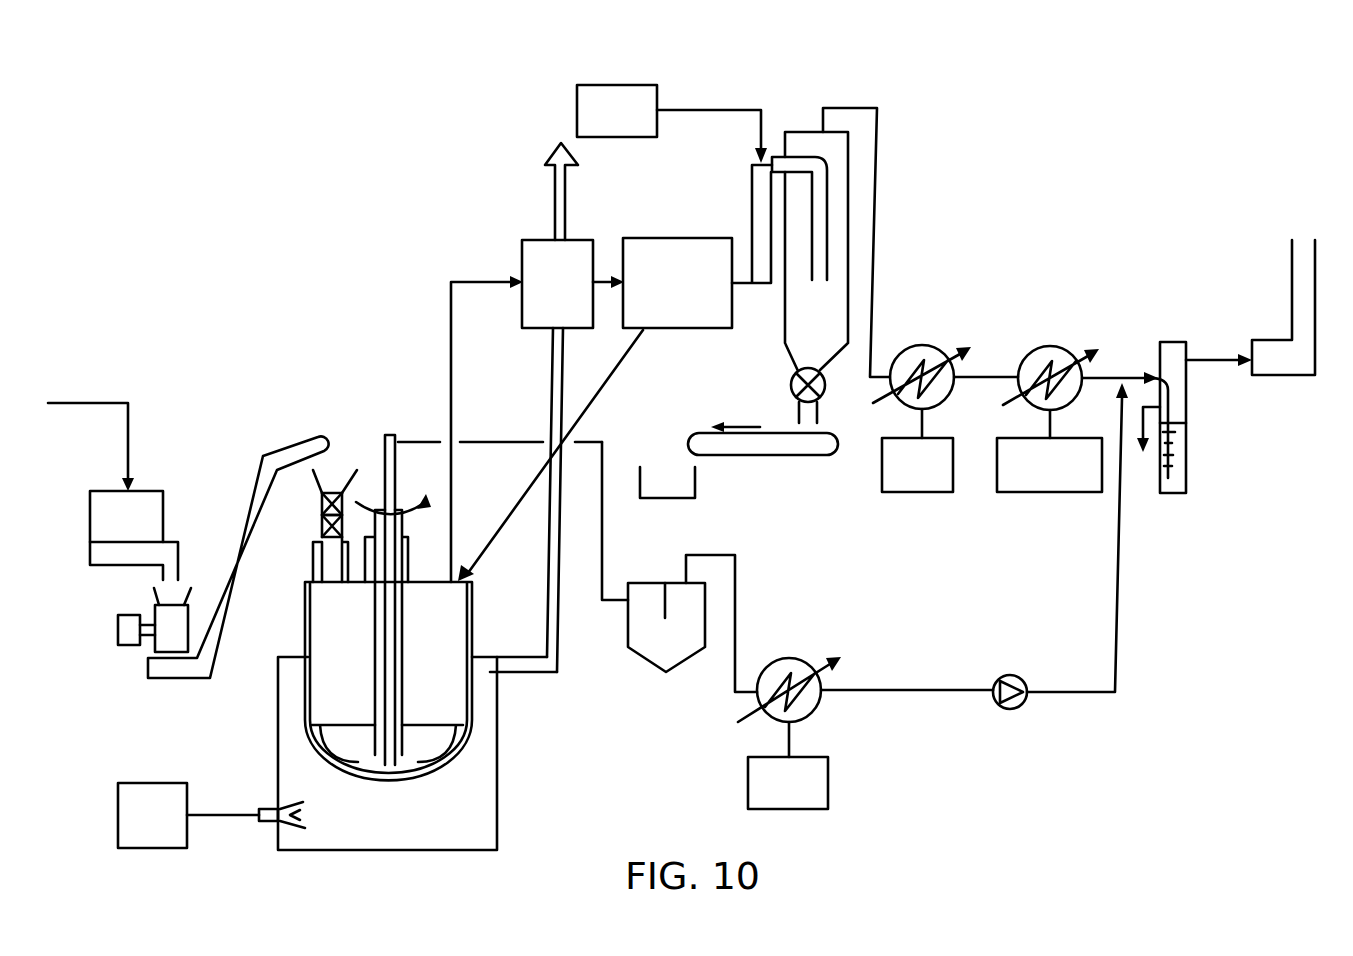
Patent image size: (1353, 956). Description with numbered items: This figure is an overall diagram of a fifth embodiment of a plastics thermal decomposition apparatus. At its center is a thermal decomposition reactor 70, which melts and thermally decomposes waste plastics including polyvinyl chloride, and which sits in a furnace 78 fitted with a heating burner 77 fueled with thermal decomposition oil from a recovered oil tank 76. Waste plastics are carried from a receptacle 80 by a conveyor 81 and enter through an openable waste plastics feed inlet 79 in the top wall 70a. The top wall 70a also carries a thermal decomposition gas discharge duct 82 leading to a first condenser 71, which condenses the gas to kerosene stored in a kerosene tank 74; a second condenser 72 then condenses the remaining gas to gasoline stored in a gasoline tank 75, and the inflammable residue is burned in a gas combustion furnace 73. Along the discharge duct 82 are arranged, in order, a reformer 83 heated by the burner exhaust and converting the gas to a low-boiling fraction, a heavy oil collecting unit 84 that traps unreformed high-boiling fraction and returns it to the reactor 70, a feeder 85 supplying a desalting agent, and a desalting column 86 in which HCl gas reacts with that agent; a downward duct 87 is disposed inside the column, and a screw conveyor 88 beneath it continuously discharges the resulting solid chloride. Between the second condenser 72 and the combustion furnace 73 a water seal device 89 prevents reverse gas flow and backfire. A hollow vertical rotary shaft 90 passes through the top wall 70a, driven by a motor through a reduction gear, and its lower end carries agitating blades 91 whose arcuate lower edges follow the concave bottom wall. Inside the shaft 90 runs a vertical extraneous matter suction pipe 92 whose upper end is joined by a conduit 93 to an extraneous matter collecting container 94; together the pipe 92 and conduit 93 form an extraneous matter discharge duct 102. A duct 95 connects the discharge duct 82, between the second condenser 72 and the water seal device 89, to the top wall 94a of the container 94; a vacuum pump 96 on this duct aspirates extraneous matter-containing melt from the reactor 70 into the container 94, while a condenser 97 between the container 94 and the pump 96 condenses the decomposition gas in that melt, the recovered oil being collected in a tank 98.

The thermal decomposition reactor 70 is at (305, 618).
The top wall 70a is at (452, 578).
The first condenser 71 is at (930, 345).
The second condenser 72 is at (1058, 347).
The gas combustion furnace 73 is at (1292, 287).
The kerosene tank 74 is at (912, 493).
The gasoline tank 75 is at (1048, 493).
The recovered oil tank 76 is at (118, 818).
The heating burner 77 is at (298, 826).
The furnace 78 is at (278, 740).
The waste plastics feed inlet 79 is at (322, 516).
The receptacle 80 is at (90, 522).
The conveyor 81 is at (250, 487).
The thermal decomposition gas discharge duct 82 is at (452, 290).
The reformer 83 is at (522, 255).
The heavy oil collecting unit 84 is at (645, 238).
The feeder 85 is at (577, 90).
The desalting column 86 is at (783, 325).
The downward duct 87 is at (825, 238).
The screw conveyor 88 is at (772, 456).
The water seal device 89 is at (1186, 478).
The hollow vertical rotary shaft 90 is at (400, 655).
The agitating blades 91 is at (437, 745).
The extraneous matter suction pipe 92 is at (380, 446).
The conduit 93 is at (600, 580).
The extraneous matter collecting container 94 is at (628, 652).
The top wall of container 94a is at (650, 583).
The duct 95 is at (1103, 697).
The vacuum pump 96 is at (1012, 710).
The condenser 97 is at (815, 713).
The tank 98 is at (748, 793).
The extraneous matter discharge duct 102 is at (600, 440).